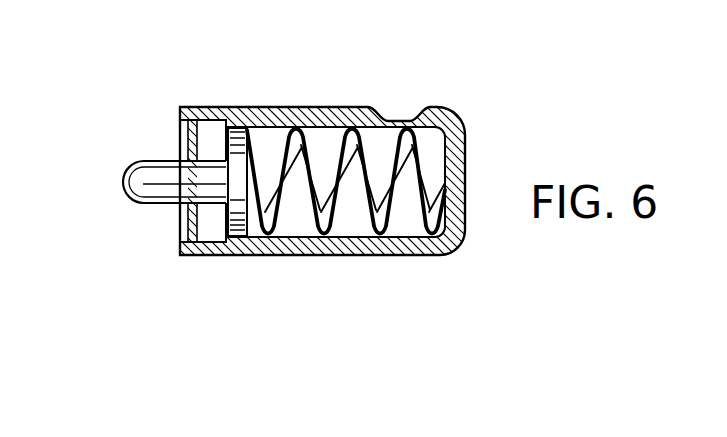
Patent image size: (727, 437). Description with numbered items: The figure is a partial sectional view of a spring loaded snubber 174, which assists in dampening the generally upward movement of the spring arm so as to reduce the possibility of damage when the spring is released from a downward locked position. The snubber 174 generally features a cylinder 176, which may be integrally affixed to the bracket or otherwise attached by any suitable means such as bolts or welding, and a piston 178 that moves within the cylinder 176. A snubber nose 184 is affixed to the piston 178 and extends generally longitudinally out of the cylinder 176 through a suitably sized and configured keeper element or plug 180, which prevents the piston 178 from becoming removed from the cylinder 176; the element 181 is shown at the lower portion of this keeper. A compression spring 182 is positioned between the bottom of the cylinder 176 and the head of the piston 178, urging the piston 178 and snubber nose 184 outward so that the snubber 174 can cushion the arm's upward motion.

The spring loaded snubber 174 is at (288, 261).
The cylinder 176 is at (257, 119).
The piston 178 is at (240, 228).
The keeper element or plug 180 is at (180, 145).
The lower end cap wall 181 is at (180, 207).
The compression spring 182 is at (351, 140).
The snubber nose 184 is at (125, 175).